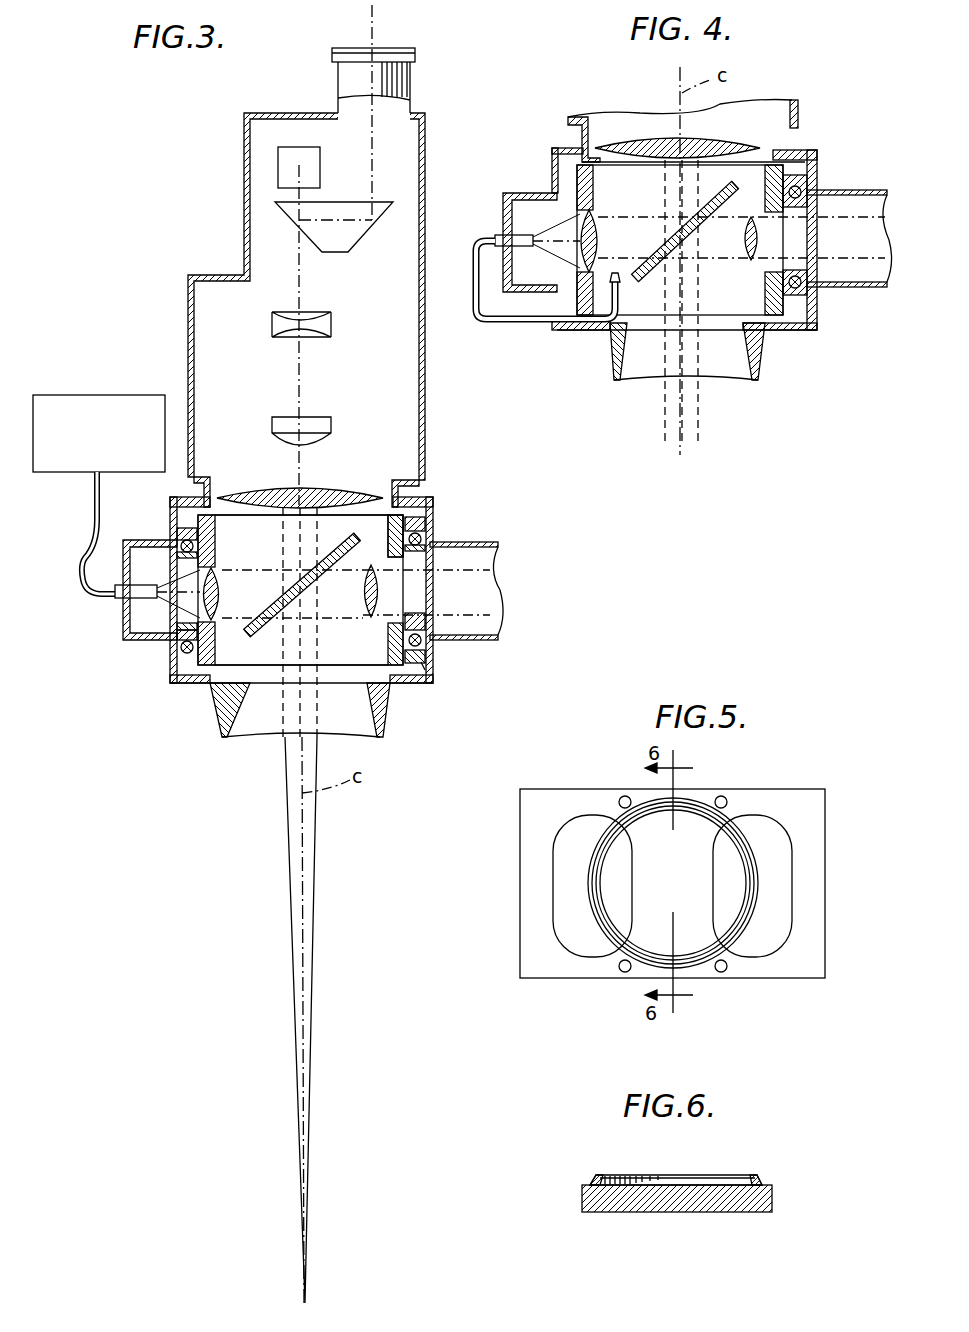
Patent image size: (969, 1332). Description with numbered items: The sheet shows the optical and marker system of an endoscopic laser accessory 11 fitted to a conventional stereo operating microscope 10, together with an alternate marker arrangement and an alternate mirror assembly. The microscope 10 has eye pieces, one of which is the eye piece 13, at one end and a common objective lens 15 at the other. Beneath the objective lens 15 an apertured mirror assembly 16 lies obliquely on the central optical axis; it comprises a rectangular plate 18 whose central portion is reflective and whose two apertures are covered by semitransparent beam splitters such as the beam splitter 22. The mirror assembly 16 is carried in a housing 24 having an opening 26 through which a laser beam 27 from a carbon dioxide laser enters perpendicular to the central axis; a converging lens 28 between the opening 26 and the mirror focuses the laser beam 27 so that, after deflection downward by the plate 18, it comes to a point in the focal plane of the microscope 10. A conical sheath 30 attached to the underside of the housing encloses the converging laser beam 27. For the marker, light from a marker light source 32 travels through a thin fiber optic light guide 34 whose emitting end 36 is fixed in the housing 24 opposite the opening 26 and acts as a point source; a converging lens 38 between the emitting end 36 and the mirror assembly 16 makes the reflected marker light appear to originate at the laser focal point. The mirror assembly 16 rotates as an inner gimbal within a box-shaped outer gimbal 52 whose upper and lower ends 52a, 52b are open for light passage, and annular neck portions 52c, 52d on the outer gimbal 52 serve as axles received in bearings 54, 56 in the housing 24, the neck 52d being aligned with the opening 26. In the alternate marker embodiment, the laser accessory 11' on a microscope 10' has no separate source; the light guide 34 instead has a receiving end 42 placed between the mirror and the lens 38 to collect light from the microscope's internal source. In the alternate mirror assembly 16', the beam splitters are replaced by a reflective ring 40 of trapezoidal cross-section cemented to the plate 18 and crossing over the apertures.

In FIG. 3, the stereo operating microscope 10 is at (306, 309).
In FIG. 4, the stereo operating microscope 10' is at (710, 117).
In FIG. 3, the endoscopic laser accessory 11 is at (282, 727).
In FIG. 4, the endoscopic laser accessory 11' is at (704, 363).
In FIG. 3, the eye piece 13 is at (410, 72).
In FIG. 3, the objective lens 15 is at (246, 492).
In FIG. 4, the objective lens 15 is at (710, 140).
In FIG. 3, the apertured mirror assembly 16 is at (302, 583).
In FIG. 4, the apertured mirror assembly 16 is at (685, 301).
In FIG. 5, the mirror assembly 16' is at (672, 855).
In FIG. 6, the mirror assembly 16' is at (662, 1157).
In FIG. 3, the rectangular plate 18 is at (360, 538).
In FIG. 4, the rectangular plate 18 is at (736, 181).
In FIG. 5, the rectangular plate 18 is at (811, 789).
In FIG. 6, the rectangular plate 18 is at (770, 1204).
In FIG. 3, the beam splitter 22 is at (388, 550).
In FIG. 4, the beam splitter 22 is at (733, 190).
In FIG. 3, the housing 24 is at (433, 510).
In FIG. 4, the housing 24 is at (817, 157).
In FIG. 3, the opening 26 is at (490, 560).
In FIG. 4, the opening 26 is at (865, 200).
In FIG. 3, the laser beam 27 is at (310, 903).
In FIG. 4, the laser beam 27 is at (862, 262).
In FIG. 3, the converging lens 28 is at (368, 598).
In FIG. 4, the converging lens 28 is at (745, 254).
In FIG. 3, the conical sheath 30 is at (385, 737).
In FIG. 4, the conical sheath 30 is at (755, 378).
In FIG. 3, the marker light source 32 is at (105, 395).
In FIG. 3, the fiber optic light guide 34 is at (86, 543).
In FIG. 4, the fiber optic light guide 34 is at (511, 325).
In FIG. 3, the light guide emitting end 36 is at (148, 580).
In FIG. 4, the light guide emitting end 36 is at (522, 235).
In FIG. 3, the converging lens 38 is at (222, 580).
In FIG. 4, the converging lens 38 is at (630, 205).
In FIG. 5, the ring 40 is at (707, 806).
In FIG. 6, the ring 40 is at (728, 1178).
In FIG. 4, the receiving end 42 is at (612, 272).
In FIG. 3, the outer gimbal 52 is at (216, 662).
In FIG. 3, the upper end of outer gimbal 52a is at (312, 510).
In FIG. 3, the lower end of outer gimbal 52b is at (332, 665).
In FIG. 3, the annular neck portion 52c is at (168, 640).
In FIG. 3, the annular neck portion 52d is at (425, 556).
In FIG. 3, the bearing 54 is at (185, 520).
In FIG. 3, the bearing 56 is at (422, 680).